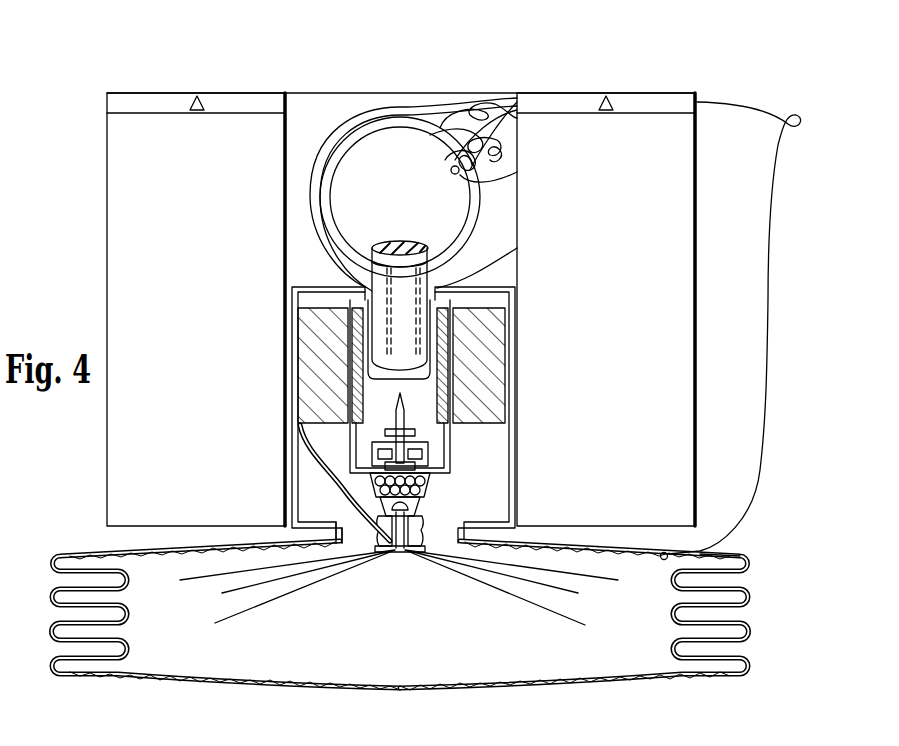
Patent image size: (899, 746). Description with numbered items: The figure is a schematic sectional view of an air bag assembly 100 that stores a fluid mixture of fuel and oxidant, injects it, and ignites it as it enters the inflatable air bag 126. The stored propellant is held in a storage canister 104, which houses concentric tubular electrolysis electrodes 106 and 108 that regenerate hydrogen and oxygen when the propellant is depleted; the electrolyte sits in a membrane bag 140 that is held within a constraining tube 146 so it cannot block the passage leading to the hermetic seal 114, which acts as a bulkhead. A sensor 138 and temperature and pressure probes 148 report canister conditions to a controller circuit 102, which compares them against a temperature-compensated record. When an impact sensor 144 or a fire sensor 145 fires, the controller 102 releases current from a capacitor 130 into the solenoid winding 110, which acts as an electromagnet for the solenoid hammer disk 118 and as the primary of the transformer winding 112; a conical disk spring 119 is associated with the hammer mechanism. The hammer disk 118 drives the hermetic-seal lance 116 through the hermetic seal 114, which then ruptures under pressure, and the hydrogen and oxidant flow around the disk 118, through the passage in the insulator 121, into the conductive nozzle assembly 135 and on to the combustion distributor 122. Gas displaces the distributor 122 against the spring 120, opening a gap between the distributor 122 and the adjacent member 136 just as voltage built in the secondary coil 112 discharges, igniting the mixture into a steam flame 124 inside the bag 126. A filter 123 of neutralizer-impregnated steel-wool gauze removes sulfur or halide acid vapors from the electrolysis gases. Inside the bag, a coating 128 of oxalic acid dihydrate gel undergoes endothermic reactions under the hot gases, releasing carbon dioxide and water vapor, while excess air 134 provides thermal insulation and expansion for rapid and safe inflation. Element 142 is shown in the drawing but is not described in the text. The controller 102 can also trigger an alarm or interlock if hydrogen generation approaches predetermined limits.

The air bag assembly 100 is at (283, 33).
The controller circuit 102 is at (647, 92).
The storage canister 104 is at (386, 127).
The electrolysis electrode 106 is at (416, 248).
The electrolysis electrode 108 is at (392, 247).
The solenoid winding 110 is at (445, 293).
The transformer winding 112 is at (508, 290).
The hermetic seal 114 is at (396, 404).
The hermetic-seal lance 116 is at (392, 428).
The solenoid hammer disk 118 is at (372, 438).
The conical disk spring 119 is at (450, 425).
The spring 120 is at (428, 506).
The insulator 121 is at (306, 481).
The combustion distributor 122 is at (404, 554).
The filter 123 is at (428, 480).
The steam flame 124 is at (542, 602).
The inflatable air bag 126 is at (700, 552).
The coating 128 is at (659, 674).
The capacitor 130 is at (126, 166).
The excess air 134 is at (377, 648).
The nozzle assembly 135 is at (412, 513).
The gap member 136 is at (345, 541).
The pressure sensor 138 is at (458, 188).
The membrane bag 140 is at (432, 252).
The cable 142 is at (340, 498).
The impact sensor 144 is at (605, 99).
The fire sensor 145 is at (202, 99).
The constraining tube 146 is at (368, 268).
The temperature and pressure probe 148 is at (770, 358).